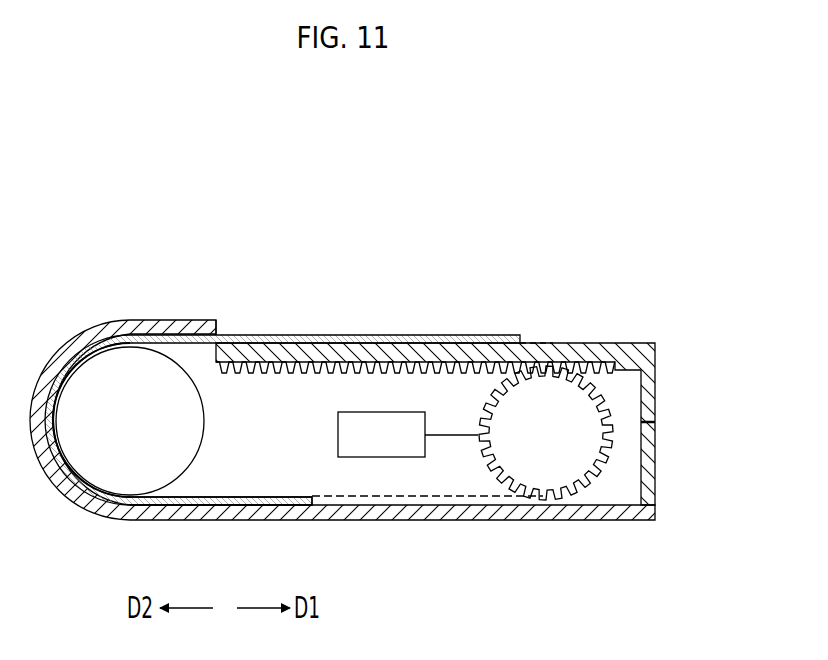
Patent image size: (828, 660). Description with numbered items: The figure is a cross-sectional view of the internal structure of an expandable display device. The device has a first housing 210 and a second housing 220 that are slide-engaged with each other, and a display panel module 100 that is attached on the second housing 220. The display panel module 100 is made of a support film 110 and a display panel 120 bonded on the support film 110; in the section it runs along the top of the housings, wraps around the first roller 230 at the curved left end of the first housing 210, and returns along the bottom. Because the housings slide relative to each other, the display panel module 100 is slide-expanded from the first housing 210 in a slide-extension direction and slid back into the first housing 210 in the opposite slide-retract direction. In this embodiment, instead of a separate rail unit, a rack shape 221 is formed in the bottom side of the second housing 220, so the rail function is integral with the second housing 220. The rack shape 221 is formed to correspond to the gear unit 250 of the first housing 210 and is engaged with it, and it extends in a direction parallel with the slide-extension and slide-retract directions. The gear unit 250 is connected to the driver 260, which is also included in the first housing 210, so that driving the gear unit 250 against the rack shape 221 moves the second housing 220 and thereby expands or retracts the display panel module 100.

The display panel module 100 is at (404, 332).
The support film 110 is at (338, 497).
The display panel 120 is at (268, 500).
The first housing 210 is at (156, 320).
The second housing 220 is at (605, 343).
The rack shape 221 is at (617, 367).
The first roller 230 is at (118, 475).
The gear unit 250 is at (545, 477).
The driver 260 is at (398, 457).